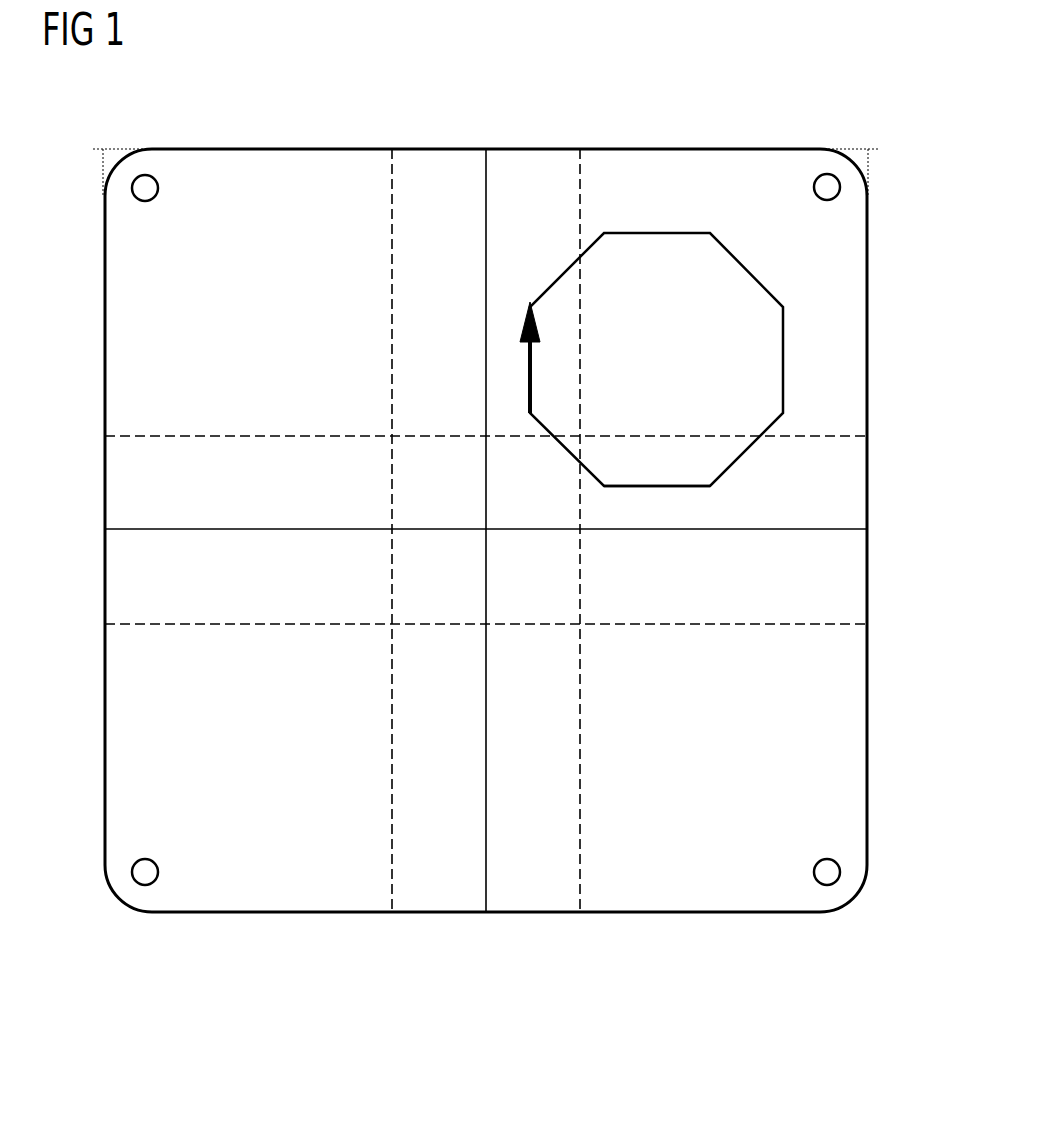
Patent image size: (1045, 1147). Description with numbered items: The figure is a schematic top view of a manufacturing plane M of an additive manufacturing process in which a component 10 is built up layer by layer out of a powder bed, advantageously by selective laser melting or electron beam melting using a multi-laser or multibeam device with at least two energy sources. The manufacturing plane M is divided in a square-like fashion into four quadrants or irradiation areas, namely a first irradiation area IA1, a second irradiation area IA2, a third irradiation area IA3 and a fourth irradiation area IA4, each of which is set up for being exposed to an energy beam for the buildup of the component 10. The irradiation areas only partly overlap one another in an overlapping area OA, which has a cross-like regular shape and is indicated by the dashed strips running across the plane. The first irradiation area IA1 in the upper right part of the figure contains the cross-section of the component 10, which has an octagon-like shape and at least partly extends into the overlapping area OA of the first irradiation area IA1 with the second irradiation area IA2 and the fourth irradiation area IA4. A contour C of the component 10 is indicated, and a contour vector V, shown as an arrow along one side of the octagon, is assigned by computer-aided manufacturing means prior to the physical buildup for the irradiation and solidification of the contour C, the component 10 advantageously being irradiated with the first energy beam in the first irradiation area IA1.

The component 10 is at (715, 455).
The contour vector V is at (521, 357).
The contour C is at (650, 487).
The manufacturing plane M is at (435, 882).
The overlapping area OA is at (579, 916).
The first irradiation area IA1 is at (866, 141).
The second irradiation area IA2 is at (486, 142).
The third irradiation area IA3 is at (292, 900).
The fourth irradiation area IA4 is at (708, 899).